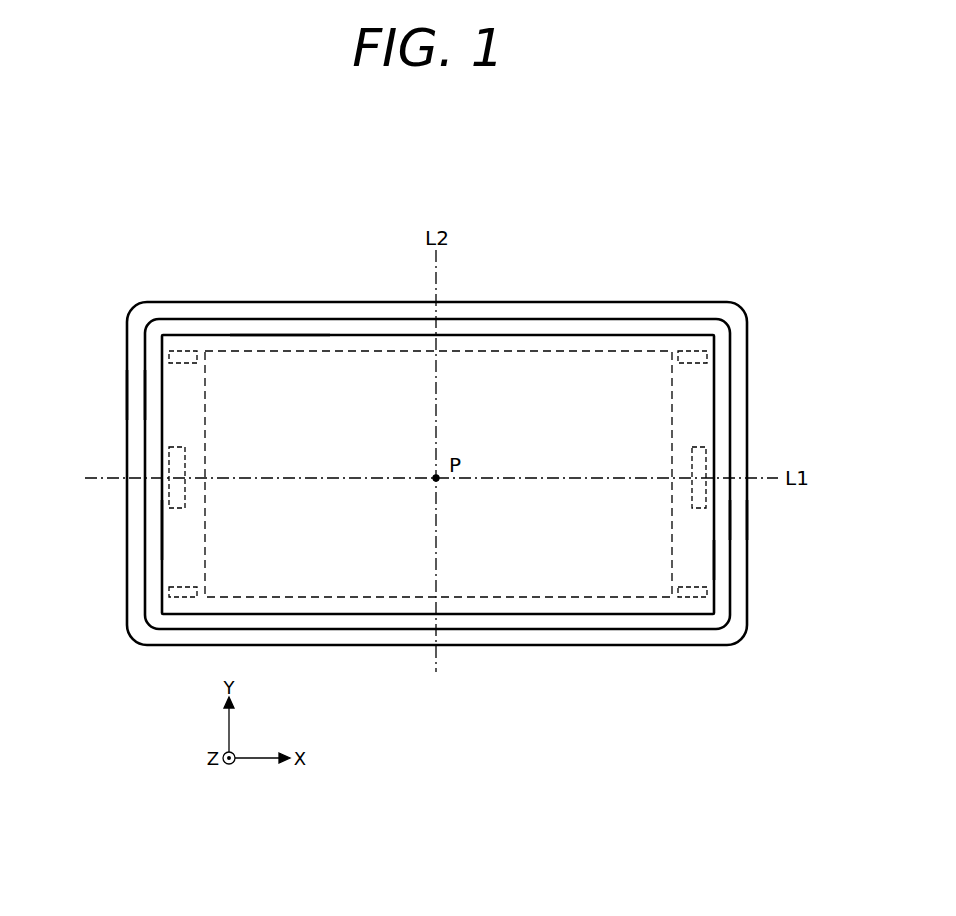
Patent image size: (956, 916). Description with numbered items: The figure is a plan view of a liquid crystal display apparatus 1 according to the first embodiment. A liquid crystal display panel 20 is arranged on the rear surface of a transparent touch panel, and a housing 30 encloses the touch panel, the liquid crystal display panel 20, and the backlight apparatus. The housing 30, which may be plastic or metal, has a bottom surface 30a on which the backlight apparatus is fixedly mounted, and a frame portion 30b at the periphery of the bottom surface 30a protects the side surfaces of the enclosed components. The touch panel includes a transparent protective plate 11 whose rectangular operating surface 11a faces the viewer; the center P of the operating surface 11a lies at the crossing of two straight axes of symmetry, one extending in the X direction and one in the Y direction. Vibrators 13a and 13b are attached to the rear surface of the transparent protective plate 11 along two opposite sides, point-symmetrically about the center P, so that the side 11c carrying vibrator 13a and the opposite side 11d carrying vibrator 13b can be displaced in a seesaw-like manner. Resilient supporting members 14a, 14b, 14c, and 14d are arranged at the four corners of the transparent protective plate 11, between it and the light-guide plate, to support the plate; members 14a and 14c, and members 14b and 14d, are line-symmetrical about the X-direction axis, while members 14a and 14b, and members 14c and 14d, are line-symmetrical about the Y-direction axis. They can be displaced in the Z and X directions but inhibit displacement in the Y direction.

The liquid crystal display apparatus 1 is at (153, 264).
The transparent protective plate 11 is at (585, 337).
The operating surface 11a is at (276, 361).
The side of the transparent protective plate 11c is at (163, 533).
The right side of display panel 11d is at (712, 557).
The vibrator 13a is at (165, 447).
The vibrator 13b is at (710, 443).
The resilient supporting member 14a is at (169, 352).
The resilient supporting member 14b is at (700, 352).
The resilient supporting member 14c is at (165, 598).
The resilient supporting member 14d is at (707, 597).
The liquid crystal display panel 20 is at (672, 412).
The housing 30 is at (740, 365).
The bottom surface 30a is at (718, 510).
The frame portion 30b is at (132, 368).